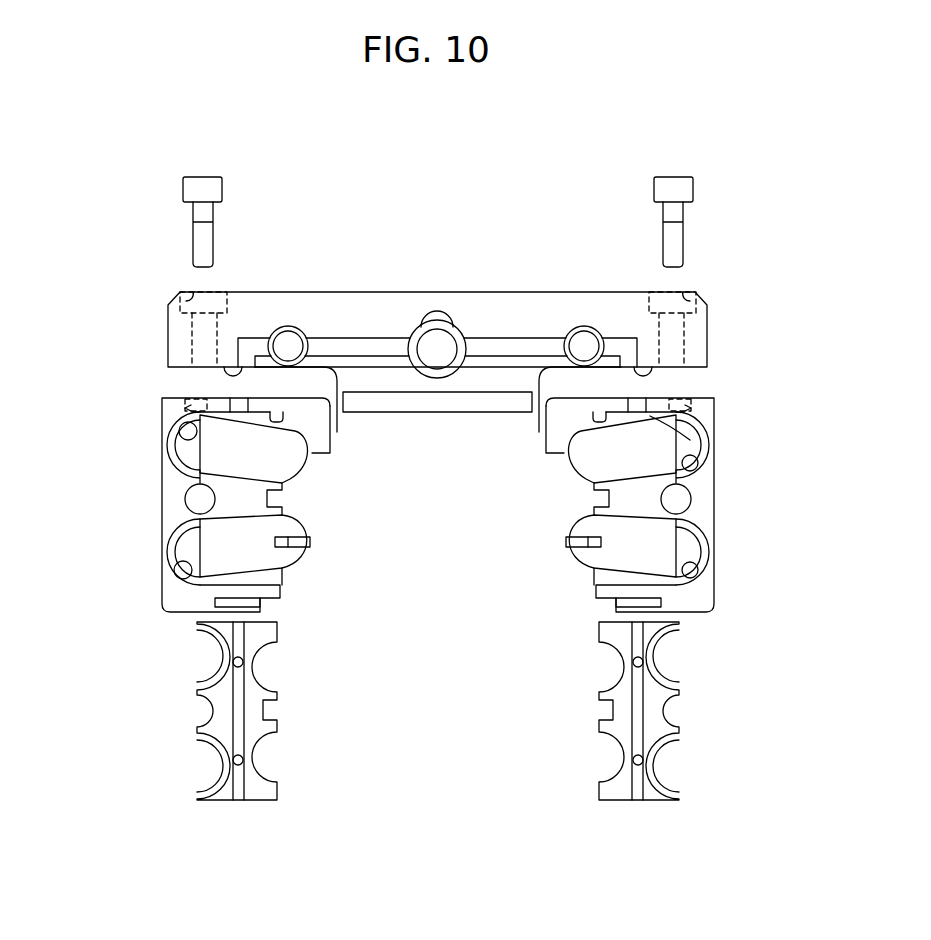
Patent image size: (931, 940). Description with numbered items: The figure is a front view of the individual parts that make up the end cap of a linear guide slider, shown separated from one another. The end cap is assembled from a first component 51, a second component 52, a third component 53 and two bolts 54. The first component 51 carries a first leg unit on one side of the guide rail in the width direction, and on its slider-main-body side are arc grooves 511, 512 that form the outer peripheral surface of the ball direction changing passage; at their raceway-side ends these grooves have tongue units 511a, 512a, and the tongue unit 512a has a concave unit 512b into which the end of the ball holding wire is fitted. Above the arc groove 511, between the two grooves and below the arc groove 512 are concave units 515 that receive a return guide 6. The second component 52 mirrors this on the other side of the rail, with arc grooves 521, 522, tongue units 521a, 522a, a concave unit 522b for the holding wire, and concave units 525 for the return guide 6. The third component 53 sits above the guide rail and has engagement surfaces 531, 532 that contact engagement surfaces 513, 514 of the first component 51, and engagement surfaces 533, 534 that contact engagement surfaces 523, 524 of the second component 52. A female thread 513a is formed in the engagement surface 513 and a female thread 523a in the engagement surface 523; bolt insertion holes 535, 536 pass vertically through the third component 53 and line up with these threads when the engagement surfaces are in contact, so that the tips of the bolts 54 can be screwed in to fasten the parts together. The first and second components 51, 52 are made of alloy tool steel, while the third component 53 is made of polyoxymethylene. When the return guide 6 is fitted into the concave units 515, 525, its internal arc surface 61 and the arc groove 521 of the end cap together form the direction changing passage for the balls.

The return guide 6 is at (197, 733).
The internal arc surface 61 is at (246, 664).
The first component 51 is at (162, 520).
The arc groove 511 is at (247, 465).
The tongue unit 511a is at (293, 465).
The arc groove 512 is at (266, 582).
The tongue unit 512a is at (293, 530).
The concave unit 512b is at (306, 543).
The engagement surface 513 is at (220, 397).
The female thread 513a is at (193, 392).
The engagement surface 514 is at (333, 436).
The concave unit 515 is at (280, 414).
The second component 52 is at (715, 517).
The arc groove 521 is at (646, 463).
The tongue unit 521a is at (568, 462).
The arc groove 522 is at (646, 564).
The tongue unit 522a is at (578, 553).
The concave unit 522b is at (571, 543).
The engagement surface 523 is at (662, 397).
The female thread 523a is at (683, 392).
The engagement surface 524 is at (543, 437).
The concave unit 525 is at (650, 418).
The third component 53 is at (497, 292).
The engagement surface 531 is at (234, 396).
The engagement surface 532 is at (331, 374).
The engagement surface 533 is at (690, 393).
The engagement surface 534 is at (546, 379).
The bolt insertion hole 535 is at (190, 290).
The bolt insertion hole 536 is at (686, 290).
The bolt 54 is at (222, 190).